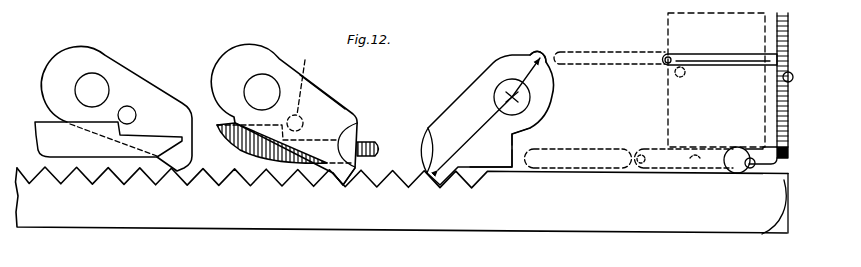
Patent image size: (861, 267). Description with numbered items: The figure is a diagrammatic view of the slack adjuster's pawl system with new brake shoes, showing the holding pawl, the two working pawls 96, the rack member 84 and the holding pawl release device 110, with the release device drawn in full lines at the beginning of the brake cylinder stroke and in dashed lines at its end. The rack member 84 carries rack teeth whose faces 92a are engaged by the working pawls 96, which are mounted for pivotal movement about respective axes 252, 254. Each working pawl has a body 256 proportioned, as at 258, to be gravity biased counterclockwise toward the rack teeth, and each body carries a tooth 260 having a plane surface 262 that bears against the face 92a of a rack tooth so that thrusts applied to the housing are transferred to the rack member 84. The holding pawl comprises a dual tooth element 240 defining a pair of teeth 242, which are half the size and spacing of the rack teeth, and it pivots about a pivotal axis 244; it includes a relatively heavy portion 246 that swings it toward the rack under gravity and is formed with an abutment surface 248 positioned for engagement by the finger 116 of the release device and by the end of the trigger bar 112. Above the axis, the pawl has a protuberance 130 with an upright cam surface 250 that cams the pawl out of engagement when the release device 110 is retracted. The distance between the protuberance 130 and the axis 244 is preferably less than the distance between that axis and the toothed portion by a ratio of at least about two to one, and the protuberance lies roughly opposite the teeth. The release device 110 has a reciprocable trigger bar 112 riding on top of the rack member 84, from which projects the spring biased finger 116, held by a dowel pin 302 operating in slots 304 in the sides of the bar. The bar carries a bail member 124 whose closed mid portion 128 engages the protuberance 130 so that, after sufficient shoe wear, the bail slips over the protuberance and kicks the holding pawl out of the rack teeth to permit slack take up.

The rack member 84 is at (254, 219).
The rack tooth face 92a is at (334, 181).
The working pawl 96 is at (162, 103).
The holding pawl release device 110 is at (662, 178).
The trigger bar 112 is at (768, 236).
The finger 116 is at (566, 170).
The bail member 124 is at (607, 67).
The closed mid portion 128 is at (562, 54).
The protuberance 130 is at (538, 50).
The dual tooth element 240 is at (451, 108).
The teeth 242 is at (425, 133).
The pivotal axis 244 is at (509, 92).
The heavy portion 246 is at (484, 151).
The abutment surface 248 is at (516, 143).
The cam surface 250 is at (533, 56).
The pivotal axis 252 is at (261, 88).
The pivotal axis 254 is at (95, 87).
The body 256 is at (334, 106).
The gravity biasing portion 258 is at (304, 88).
The tooth 260 is at (131, 108).
The plane surface 262 is at (193, 160).
The dowel pin 302 is at (652, 139).
The slots 304 is at (768, 152).